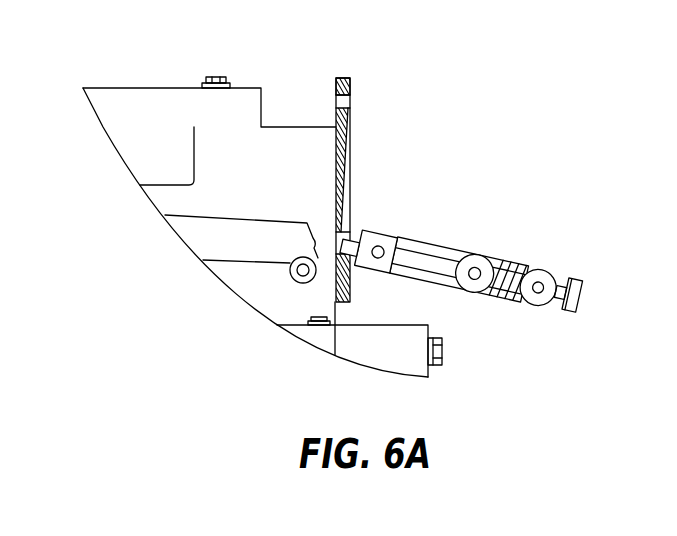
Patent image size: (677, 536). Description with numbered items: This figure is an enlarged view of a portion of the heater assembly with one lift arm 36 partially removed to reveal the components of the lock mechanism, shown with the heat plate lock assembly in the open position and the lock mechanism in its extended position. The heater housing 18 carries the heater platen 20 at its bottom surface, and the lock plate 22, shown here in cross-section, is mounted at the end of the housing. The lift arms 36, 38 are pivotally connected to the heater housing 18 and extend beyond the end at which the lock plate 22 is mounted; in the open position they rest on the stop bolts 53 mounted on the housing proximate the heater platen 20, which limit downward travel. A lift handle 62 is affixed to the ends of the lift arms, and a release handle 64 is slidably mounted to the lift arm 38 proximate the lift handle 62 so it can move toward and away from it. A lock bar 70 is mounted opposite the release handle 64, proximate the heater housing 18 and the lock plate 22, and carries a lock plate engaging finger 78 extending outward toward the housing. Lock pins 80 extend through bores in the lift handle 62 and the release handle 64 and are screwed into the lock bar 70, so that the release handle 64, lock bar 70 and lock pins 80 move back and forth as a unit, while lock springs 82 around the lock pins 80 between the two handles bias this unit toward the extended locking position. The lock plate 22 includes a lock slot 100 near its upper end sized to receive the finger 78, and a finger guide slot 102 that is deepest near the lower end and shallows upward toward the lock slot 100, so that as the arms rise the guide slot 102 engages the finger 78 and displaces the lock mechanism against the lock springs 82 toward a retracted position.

The heater housing 18 is at (203, 145).
The heater platen 20 is at (418, 365).
The lock plate 22 is at (350, 131).
The lock slot 100 is at (348, 100).
The finger guide slot 102 is at (346, 162).
The lift arm 36 is at (247, 252).
The stop bolt 53 is at (298, 282).
The lock plate engaging finger 78 is at (354, 240).
The lock bar 70 is at (380, 240).
The lift arm 38 is at (430, 247).
The release handle 64 is at (472, 257).
The lift handle 62 is at (545, 268).
The lock pin 80 is at (575, 278).
The lock spring 82 is at (507, 290).